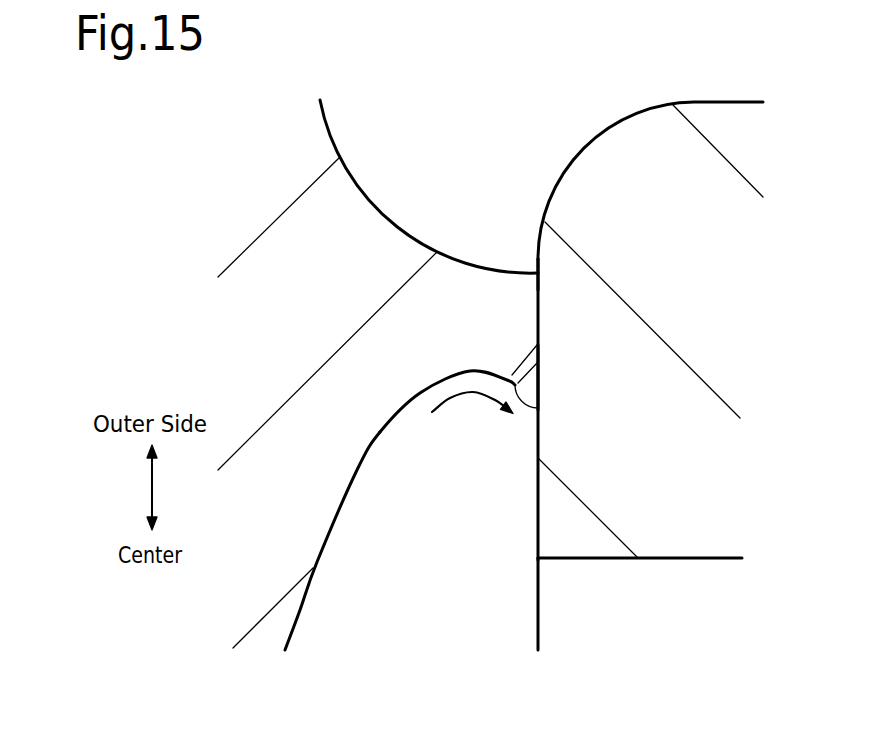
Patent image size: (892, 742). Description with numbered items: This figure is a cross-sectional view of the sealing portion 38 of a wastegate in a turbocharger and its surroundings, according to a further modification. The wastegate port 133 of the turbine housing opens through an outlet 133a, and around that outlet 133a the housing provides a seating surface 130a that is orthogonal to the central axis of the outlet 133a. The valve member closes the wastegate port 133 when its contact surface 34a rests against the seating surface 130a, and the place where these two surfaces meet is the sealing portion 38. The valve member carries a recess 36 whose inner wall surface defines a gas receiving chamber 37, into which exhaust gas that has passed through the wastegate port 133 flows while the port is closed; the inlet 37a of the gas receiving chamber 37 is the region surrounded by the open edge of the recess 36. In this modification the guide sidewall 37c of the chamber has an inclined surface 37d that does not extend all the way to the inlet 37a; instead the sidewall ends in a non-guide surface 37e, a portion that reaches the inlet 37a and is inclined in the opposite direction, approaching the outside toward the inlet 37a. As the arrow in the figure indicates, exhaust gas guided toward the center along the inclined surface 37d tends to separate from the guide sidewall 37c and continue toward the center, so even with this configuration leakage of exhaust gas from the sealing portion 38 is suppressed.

The recess 36 is at (390, 452).
The gas receiving chamber 37 is at (434, 614).
The inlet 37a is at (357, 470).
The guide sidewall 37c is at (621, 368).
The inclined surface 37d is at (538, 407).
The non-guide surface 37e is at (530, 378).
The sealing portion 38 is at (524, 210).
The contact surface 34a is at (538, 323).
The seating surface 130a is at (537, 302).
The wastegate port 133 is at (693, 562).
The outlet 133a is at (548, 562).